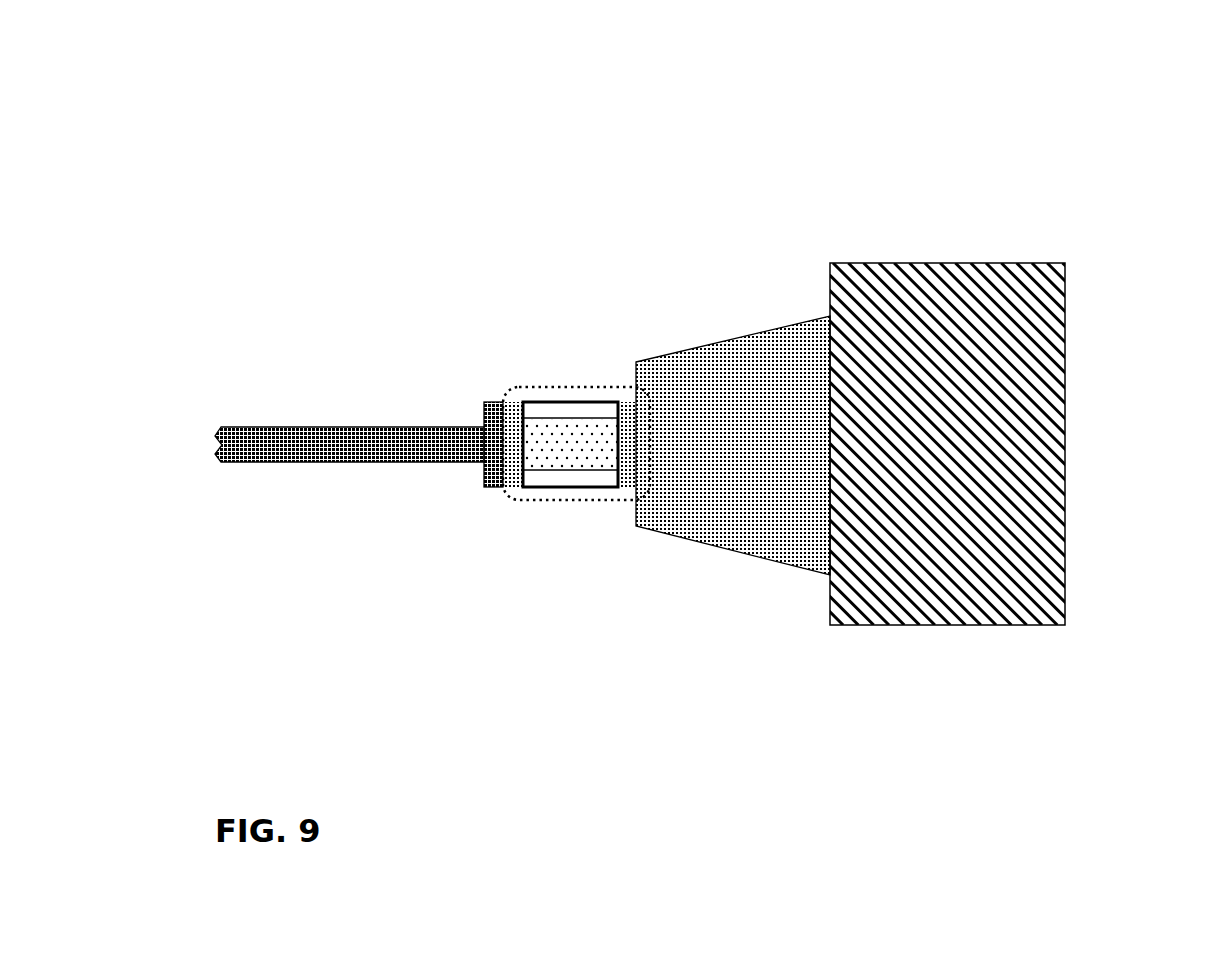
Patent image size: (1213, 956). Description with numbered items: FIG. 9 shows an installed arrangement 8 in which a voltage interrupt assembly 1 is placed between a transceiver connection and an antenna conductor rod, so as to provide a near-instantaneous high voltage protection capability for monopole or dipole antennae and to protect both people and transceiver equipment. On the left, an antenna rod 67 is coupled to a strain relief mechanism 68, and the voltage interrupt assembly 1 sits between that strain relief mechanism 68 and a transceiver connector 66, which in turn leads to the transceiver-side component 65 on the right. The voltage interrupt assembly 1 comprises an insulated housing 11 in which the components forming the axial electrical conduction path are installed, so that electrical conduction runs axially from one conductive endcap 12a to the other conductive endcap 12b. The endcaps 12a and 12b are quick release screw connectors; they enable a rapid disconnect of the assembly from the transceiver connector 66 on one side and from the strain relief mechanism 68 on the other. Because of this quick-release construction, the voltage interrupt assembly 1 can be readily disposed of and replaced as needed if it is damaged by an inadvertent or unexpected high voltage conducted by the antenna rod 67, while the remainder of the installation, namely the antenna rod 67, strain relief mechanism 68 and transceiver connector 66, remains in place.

The optical connection arrangement 8 is at (1114, 174).
The voltage interrupt assembly 1 is at (546, 370).
The insulated housing 11 is at (568, 497).
The conductive endcap 12a is at (625, 494).
The conductive endcap 12b is at (513, 493).
The optoelectronic component 65 is at (1069, 370).
The transceiver connector 66 is at (793, 316).
The antenna rod 67 is at (364, 464).
The strain relief mechanism 68 is at (478, 394).